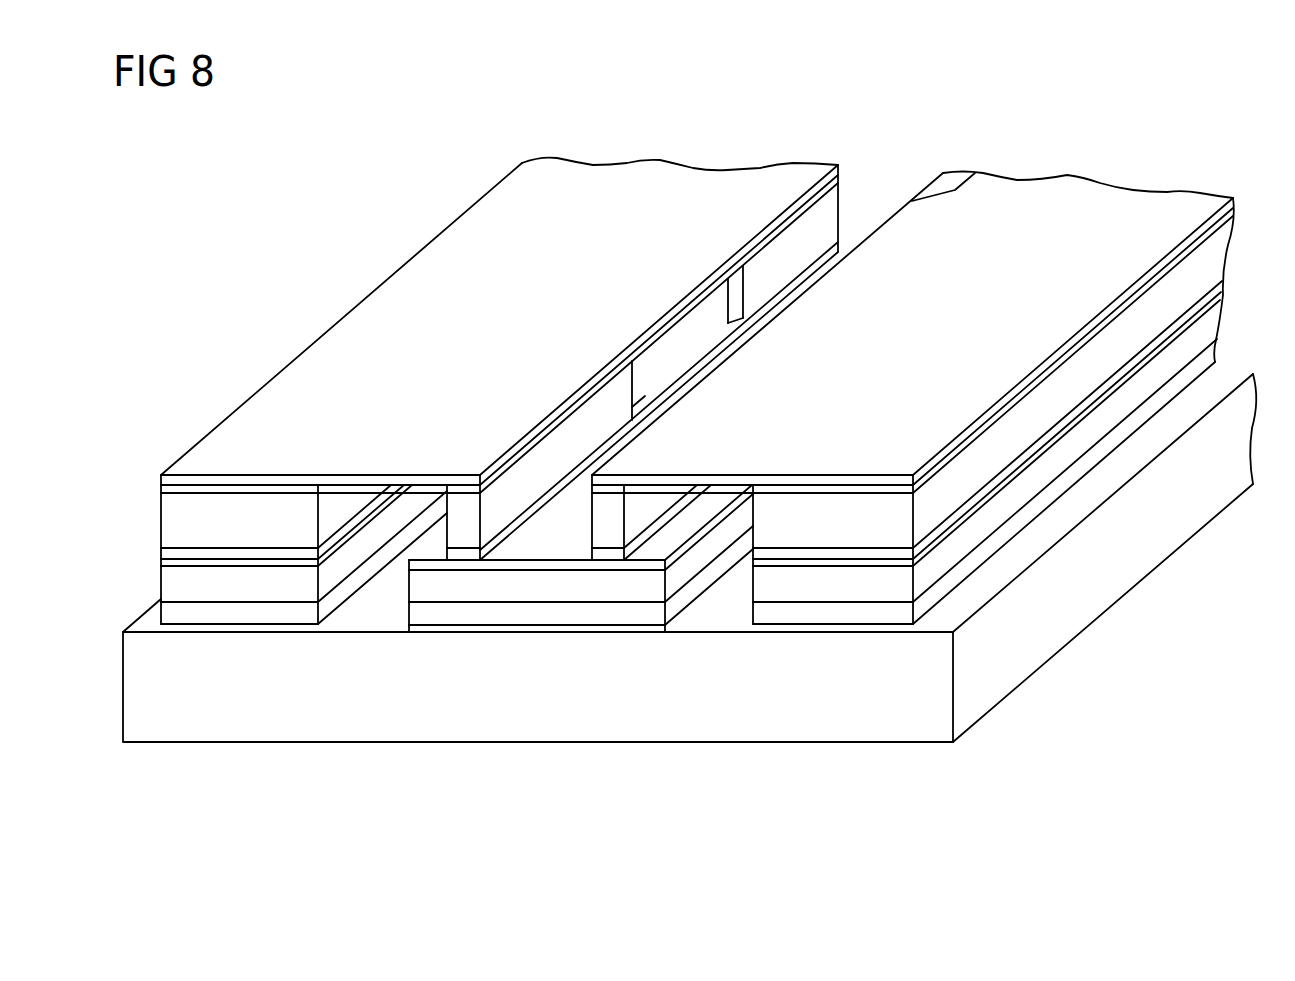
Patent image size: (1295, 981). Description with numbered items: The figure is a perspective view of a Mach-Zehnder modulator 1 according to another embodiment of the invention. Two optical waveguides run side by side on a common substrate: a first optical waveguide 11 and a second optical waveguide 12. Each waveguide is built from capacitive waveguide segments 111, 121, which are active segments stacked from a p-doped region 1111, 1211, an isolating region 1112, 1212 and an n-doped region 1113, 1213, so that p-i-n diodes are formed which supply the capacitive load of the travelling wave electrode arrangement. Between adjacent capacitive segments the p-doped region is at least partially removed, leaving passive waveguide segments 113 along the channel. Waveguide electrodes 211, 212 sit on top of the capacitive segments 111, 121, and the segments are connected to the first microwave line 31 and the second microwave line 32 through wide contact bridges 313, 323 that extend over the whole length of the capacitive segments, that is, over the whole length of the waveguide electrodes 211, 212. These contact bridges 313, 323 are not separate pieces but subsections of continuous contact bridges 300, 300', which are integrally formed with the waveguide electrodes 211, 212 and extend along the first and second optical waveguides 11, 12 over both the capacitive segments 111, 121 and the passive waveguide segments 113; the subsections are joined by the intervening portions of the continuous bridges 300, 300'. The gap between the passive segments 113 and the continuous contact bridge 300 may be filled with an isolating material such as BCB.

The Mach-Zehnder modulator 1 is at (1140, 165).
The continuous contact bridge 300 is at (499, 357).
The continuous contact bridge 300' is at (912, 324).
The first microwave line 31 is at (399, 308).
The second microwave line 32 is at (993, 370).
The contact bridge 313 is at (660, 190).
The contact bridge 323 is at (898, 258).
The waveguide electrode 211 is at (821, 182).
The waveguide electrode 212 is at (913, 205).
The capacitive waveguide segment 111 is at (793, 243).
The passive waveguide segment 113 is at (687, 367).
The first optical waveguide 11 is at (466, 543).
The p-doped region 1111 is at (461, 512).
The isolating region 1112 is at (438, 587).
The n-doped region 1113 is at (484, 612).
The second optical waveguide 12 is at (607, 567).
The capacitive waveguide segment 121 is at (648, 513).
The p-doped region 1211 is at (607, 513).
The isolating region 1212 is at (648, 587).
The n-doped region 1213 is at (645, 613).